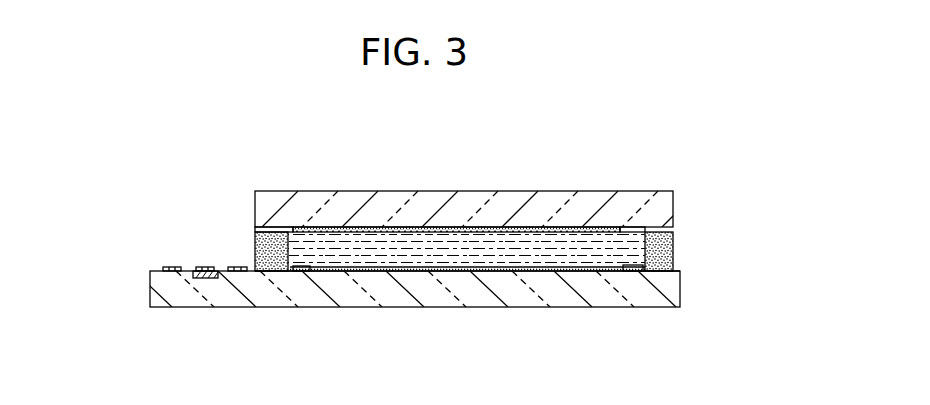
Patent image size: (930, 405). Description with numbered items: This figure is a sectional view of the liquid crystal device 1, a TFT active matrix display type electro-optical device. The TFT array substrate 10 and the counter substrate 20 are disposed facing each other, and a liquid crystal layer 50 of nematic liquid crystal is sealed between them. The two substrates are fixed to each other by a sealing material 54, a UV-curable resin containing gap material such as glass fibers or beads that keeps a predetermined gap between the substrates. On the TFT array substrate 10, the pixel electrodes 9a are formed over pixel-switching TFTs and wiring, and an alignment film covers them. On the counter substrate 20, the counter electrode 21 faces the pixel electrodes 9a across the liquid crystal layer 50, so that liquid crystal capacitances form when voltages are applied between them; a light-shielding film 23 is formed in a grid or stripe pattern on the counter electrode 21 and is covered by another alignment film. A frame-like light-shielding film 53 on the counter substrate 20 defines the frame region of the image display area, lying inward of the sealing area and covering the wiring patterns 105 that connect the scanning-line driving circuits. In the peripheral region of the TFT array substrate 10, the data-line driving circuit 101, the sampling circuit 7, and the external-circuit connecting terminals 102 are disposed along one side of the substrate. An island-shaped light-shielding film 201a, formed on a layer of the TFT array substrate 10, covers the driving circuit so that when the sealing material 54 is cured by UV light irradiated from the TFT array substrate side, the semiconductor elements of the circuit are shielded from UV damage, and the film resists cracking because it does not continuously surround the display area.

The liquid crystal device 1 is at (668, 133).
The sampling circuit 7 is at (233, 267).
The pixel electrodes 9a is at (340, 272).
The TFT array substrate 10 is at (487, 300).
The counter substrate 20 is at (366, 205).
The counter electrode 21 is at (578, 229).
The light-shielding film 23 is at (463, 228).
The liquid crystal layer 50 is at (422, 254).
The frame-like light-shielding film 53 is at (298, 233).
The sealing material 54 is at (254, 264).
The data-line driving circuit 101 is at (204, 267).
The external-circuit connecting terminals 102 is at (172, 267).
The wiring patterns 105 is at (636, 263).
The light-shielding film 201a is at (204, 279).